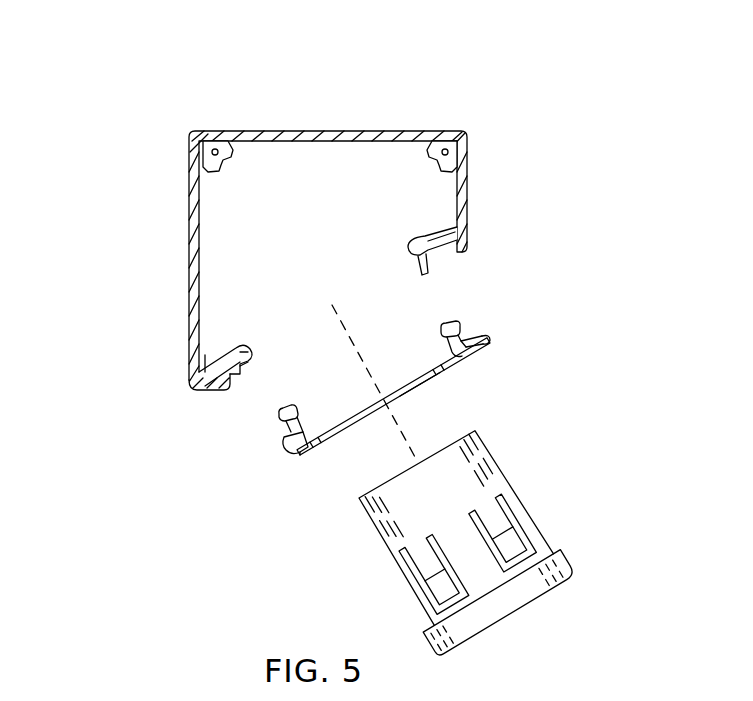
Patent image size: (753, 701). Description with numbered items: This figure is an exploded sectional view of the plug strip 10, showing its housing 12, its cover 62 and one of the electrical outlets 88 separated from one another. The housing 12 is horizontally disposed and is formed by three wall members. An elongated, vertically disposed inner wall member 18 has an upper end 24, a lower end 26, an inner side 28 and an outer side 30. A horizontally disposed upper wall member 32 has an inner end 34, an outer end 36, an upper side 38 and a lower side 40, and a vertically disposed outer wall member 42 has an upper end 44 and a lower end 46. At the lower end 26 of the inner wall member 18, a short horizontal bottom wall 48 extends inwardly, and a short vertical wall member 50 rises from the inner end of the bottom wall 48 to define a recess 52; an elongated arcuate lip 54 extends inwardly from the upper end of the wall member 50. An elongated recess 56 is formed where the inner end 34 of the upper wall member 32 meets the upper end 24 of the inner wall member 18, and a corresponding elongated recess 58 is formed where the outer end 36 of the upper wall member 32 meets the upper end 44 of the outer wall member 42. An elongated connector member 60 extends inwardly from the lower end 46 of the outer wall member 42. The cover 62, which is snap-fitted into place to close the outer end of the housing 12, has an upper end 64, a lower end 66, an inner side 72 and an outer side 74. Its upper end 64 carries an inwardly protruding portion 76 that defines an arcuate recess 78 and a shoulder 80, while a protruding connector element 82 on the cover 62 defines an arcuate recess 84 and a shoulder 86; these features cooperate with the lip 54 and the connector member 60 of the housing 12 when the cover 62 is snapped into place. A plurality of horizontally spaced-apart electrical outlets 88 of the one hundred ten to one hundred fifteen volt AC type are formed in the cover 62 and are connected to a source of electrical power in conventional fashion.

The plug strip 10 is at (410, 72).
The housing 12 is at (341, 122).
The inner wall member 18 is at (178, 237).
The upper end 24 is at (190, 137).
The lower end 26 is at (188, 378).
The inner side 28 is at (414, 133).
The outer side 30 is at (189, 302).
The upper wall member 32 is at (290, 118).
The inner end 34 is at (200, 130).
The outer end 36 is at (468, 132).
The upper side 38 is at (252, 131).
The lower side 40 is at (357, 141).
The outer wall member 42 is at (476, 191).
The upper end 44 is at (470, 143).
The lower end 46 is at (468, 245).
The bottom wall 48 is at (205, 388).
The wall member 50 is at (237, 368).
The recess 52 is at (205, 365).
The arcuate lip 54 is at (240, 345).
The recess 56 is at (221, 153).
The recess 58 is at (434, 165).
The connector member 60 is at (414, 278).
The cover 62 is at (466, 378).
The upper end 64 is at (492, 340).
The lower end 66 is at (293, 457).
The inner side 72 is at (430, 370).
The outer side 74 is at (428, 387).
The inwardly protruding portion 76 is at (457, 322).
The arcuate recess 78 is at (465, 338).
The shoulder 80 is at (447, 337).
The connector element 82 is at (283, 452).
The arcuate recess 84 is at (277, 415).
The shoulder 86 is at (307, 415).
The electrical outlets 88 is at (528, 492).